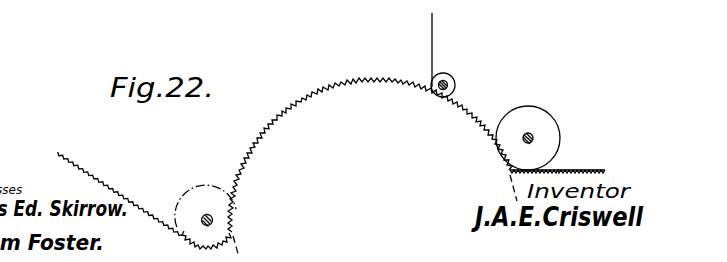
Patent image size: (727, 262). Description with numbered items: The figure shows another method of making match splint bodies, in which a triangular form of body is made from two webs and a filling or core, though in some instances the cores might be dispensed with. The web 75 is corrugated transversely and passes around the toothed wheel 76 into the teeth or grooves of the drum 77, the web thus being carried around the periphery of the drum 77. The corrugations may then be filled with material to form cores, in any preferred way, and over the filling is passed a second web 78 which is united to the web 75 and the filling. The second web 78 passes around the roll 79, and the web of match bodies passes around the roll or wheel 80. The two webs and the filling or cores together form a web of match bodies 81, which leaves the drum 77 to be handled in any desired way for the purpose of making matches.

The web 75 is at (113, 188).
The toothed wheel 76 is at (200, 190).
The drum 77 is at (273, 128).
The second web 78 is at (432, 42).
The roll 79 is at (455, 82).
The roll or wheel 80 is at (533, 110).
The web of match bodies 81 is at (585, 170).